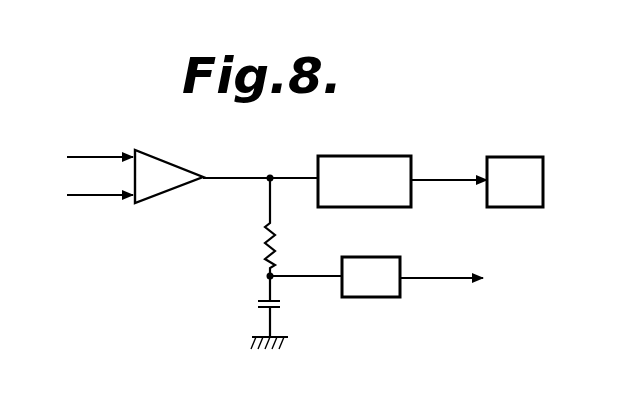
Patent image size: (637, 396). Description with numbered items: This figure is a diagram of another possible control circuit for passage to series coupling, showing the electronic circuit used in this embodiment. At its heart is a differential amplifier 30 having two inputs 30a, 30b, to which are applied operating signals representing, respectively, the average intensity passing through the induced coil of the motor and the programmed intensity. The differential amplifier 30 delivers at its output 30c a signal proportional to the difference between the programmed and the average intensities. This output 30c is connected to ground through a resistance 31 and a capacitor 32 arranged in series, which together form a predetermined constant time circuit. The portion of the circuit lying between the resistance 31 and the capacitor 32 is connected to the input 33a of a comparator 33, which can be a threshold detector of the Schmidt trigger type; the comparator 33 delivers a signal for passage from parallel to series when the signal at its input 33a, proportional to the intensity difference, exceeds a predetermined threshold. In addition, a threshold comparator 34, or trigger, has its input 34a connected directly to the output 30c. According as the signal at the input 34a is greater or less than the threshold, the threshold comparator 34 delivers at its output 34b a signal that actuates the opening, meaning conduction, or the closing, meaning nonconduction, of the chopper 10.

The chopper 10 is at (515, 182).
The differential amplifier 30 is at (167, 170).
The input 30a is at (91, 195).
The input 30b is at (85, 157).
The output 30c is at (226, 179).
The resistance 31 is at (263, 248).
The capacitor 32 is at (262, 303).
The comparator 33 is at (382, 270).
The input 33a is at (330, 278).
The threshold comparator 34 is at (364, 181).
The input 34a is at (290, 177).
The output 34b is at (445, 180).